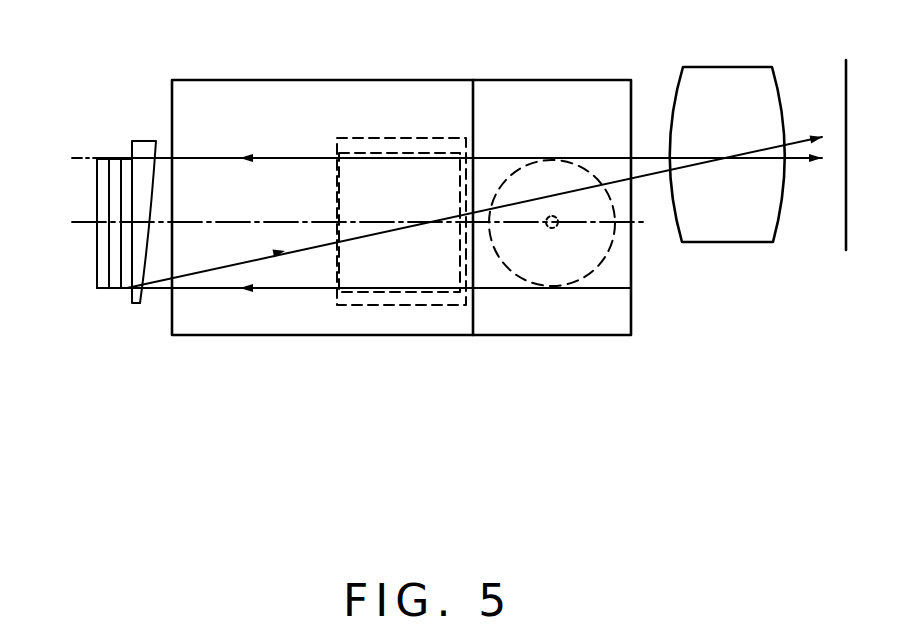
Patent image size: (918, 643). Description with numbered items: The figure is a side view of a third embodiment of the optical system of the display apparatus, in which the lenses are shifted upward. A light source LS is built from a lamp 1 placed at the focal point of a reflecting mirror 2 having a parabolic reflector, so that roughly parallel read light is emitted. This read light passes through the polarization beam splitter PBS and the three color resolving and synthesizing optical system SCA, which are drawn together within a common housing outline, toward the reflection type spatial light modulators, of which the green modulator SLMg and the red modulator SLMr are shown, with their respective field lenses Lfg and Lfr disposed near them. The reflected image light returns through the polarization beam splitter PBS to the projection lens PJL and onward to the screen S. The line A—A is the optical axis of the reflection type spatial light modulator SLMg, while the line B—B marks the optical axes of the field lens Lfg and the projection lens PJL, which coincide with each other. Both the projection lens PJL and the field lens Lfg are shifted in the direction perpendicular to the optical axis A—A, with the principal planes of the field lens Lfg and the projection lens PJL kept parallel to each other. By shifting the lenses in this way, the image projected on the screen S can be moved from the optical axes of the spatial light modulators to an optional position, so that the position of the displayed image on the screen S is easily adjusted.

The three color resolving and synthesizing optical system SCA is at (250, 338).
The polarization beam splitter PBS is at (548, 338).
The reflection type spatial light modulator SLMg is at (96, 292).
The field lens Lfg is at (136, 306).
The field lens Lfr is at (377, 134).
The reflection type spatial light modulator SLMr is at (336, 264).
The light source LS is at (502, 180).
The lamp 1 is at (548, 229).
The reflecting mirror 2 is at (596, 270).
The projection lens PJL is at (727, 248).
The screen S is at (846, 92).
The optical axis A— A is at (356, 225).
The line B— B is at (438, 214).